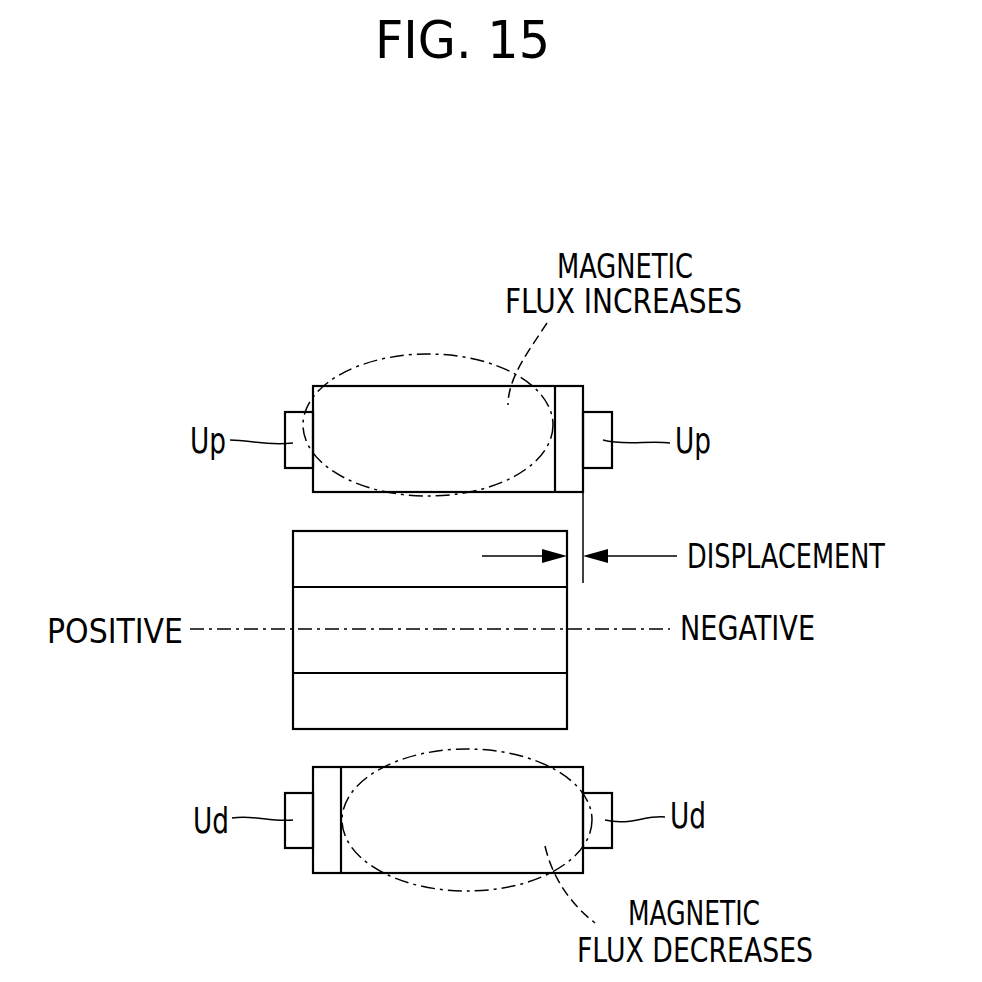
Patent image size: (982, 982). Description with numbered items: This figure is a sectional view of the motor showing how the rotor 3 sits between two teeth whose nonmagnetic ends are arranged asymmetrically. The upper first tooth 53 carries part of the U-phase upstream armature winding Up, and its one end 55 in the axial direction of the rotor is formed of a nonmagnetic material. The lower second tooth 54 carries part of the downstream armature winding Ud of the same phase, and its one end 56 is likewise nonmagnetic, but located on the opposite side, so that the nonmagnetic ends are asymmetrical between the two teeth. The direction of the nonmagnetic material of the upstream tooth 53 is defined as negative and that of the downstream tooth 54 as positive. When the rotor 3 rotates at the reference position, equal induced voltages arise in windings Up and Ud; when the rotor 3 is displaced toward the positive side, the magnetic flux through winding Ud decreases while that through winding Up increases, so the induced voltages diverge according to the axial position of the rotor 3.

The rotor 3 is at (640, 700).
The first tooth 53 is at (456, 405).
The second tooth 54 is at (462, 858).
The one end of the first tooth 55 is at (572, 396).
The one end of the second tooth 56 is at (325, 860).